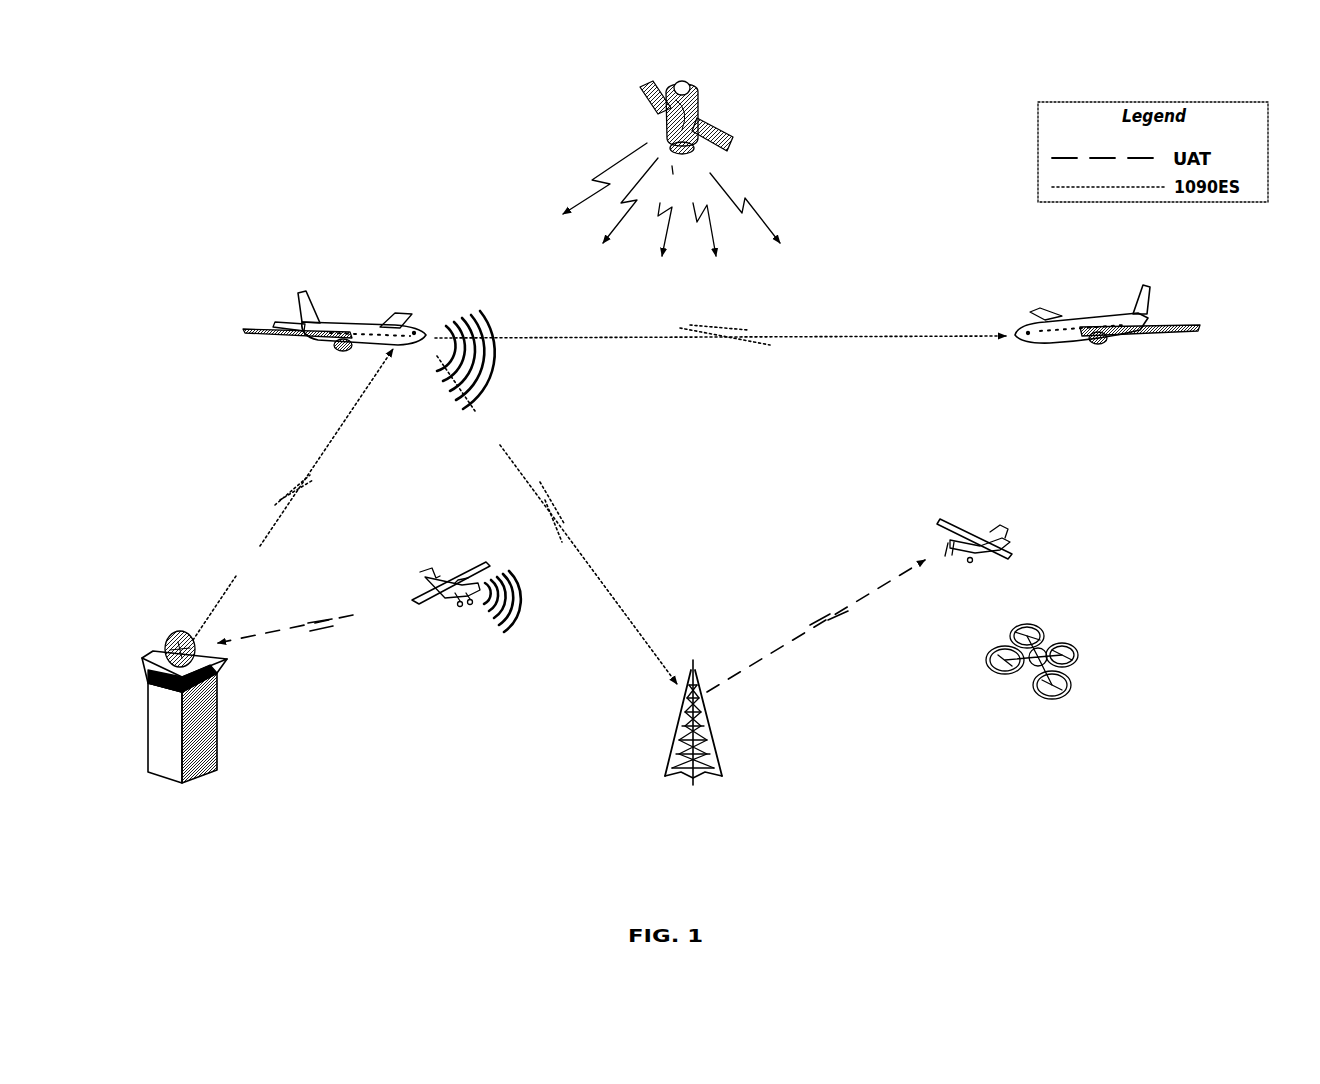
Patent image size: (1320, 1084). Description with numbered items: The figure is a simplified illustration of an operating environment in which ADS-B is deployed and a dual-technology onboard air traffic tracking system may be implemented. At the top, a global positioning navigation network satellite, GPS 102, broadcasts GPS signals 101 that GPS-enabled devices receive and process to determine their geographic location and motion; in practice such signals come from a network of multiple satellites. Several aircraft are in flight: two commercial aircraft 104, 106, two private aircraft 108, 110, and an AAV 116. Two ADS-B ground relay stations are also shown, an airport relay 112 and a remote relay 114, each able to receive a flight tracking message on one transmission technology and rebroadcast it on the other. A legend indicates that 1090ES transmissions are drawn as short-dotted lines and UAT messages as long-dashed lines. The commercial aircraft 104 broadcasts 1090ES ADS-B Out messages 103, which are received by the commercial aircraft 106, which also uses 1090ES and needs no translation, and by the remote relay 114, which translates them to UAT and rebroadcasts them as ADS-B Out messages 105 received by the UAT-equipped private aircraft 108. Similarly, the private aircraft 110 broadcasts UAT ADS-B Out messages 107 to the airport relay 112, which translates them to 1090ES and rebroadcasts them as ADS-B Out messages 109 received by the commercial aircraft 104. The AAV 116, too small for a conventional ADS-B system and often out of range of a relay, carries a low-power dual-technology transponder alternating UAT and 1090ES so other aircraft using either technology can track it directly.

The GPS signals 101 is at (685, 196).
The GPS 102 is at (715, 75).
The ADS-B Out messages 103 is at (595, 353).
The commercial aircraft 104 is at (333, 396).
The ADS-B Out messages 105 is at (795, 670).
The commercial aircraft 106 is at (1170, 403).
The ADS-B Out messages 107 is at (393, 626).
The private aircraft 108 is at (1133, 585).
The ADS-B Out messages 109 is at (258, 570).
The private aircraft 110 is at (467, 560).
The airport relay 112 is at (237, 835).
The remote relay 114 is at (746, 835).
The AAV 116 is at (1027, 711).